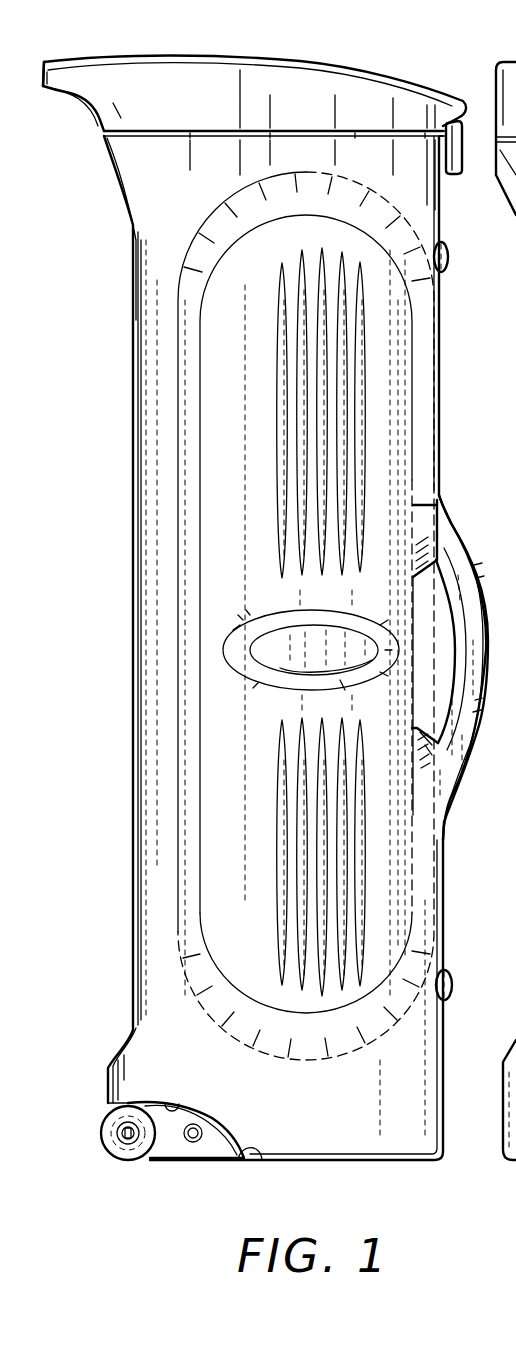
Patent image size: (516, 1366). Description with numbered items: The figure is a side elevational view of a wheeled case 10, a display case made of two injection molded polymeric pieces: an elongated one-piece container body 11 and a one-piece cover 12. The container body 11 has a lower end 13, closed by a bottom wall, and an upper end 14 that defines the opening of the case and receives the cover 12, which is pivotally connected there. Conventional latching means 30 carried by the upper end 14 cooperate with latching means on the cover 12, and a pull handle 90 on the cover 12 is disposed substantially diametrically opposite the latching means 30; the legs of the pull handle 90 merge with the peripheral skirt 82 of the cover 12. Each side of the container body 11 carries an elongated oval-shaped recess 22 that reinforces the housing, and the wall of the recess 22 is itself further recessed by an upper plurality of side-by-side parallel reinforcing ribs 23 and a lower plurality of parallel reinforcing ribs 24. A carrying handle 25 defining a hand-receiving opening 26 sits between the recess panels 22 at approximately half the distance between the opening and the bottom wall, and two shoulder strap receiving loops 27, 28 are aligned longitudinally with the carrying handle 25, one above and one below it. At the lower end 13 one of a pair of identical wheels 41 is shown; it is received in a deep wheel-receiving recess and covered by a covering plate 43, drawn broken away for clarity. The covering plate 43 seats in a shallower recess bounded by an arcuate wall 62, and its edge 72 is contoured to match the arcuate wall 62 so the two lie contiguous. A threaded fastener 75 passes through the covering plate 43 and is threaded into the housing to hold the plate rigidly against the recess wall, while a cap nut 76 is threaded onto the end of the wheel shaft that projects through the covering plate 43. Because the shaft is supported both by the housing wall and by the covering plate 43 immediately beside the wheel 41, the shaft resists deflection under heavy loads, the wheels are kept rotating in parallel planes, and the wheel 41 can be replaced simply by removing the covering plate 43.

The wheeled case 10 is at (322, 48).
The container body 11 is at (118, 492).
The cover 12 is at (193, 84).
The lower end 13 is at (162, 1024).
The upper end 14 is at (134, 219).
The oval-shaped recesses 22 is at (418, 956).
The upper reinforcing ribs 23 is at (322, 456).
The lower reinforcing ribs 24 is at (320, 794).
The carrying handle 25 is at (452, 575).
The hand-receiving opening 26 is at (437, 688).
The upper shoulder strap receiving loop 27 is at (449, 262).
The lower shoulder strap receiving loop 28 is at (455, 980).
The latching means 30 is at (462, 168).
The wheel 41 is at (100, 1140).
The covering plate 43 is at (168, 1136).
The arcuate wall 62 is at (178, 1104).
The covering plate edge 72 is at (252, 1160).
The threaded fastener 75 is at (200, 1133).
The cap nut 76 is at (133, 1142).
The peripheral skirt 82 is at (210, 120).
The pull handle 90 is at (48, 80).